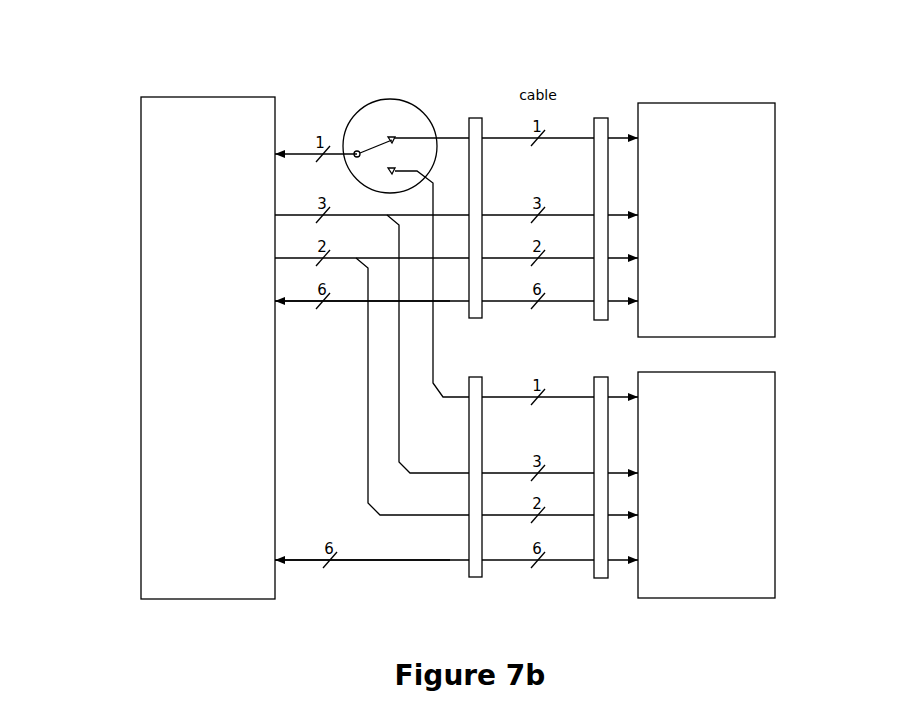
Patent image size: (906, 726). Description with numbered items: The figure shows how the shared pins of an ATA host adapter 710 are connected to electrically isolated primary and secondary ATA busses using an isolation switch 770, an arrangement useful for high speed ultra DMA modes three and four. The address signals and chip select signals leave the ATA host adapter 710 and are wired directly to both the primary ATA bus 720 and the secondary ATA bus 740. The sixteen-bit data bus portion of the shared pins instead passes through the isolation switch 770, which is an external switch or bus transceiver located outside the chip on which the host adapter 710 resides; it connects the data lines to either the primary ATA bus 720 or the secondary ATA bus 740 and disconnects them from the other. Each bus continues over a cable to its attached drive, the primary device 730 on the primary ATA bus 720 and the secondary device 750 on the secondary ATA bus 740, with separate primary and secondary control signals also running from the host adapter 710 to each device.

The ATA host adapter 710 is at (185, 96).
The isolation switch 770 is at (363, 100).
The primary ATA bus 720 is at (473, 116).
The primary device 730 is at (703, 205).
The secondary ATA bus 740 is at (473, 580).
The secondary device 750 is at (699, 475).